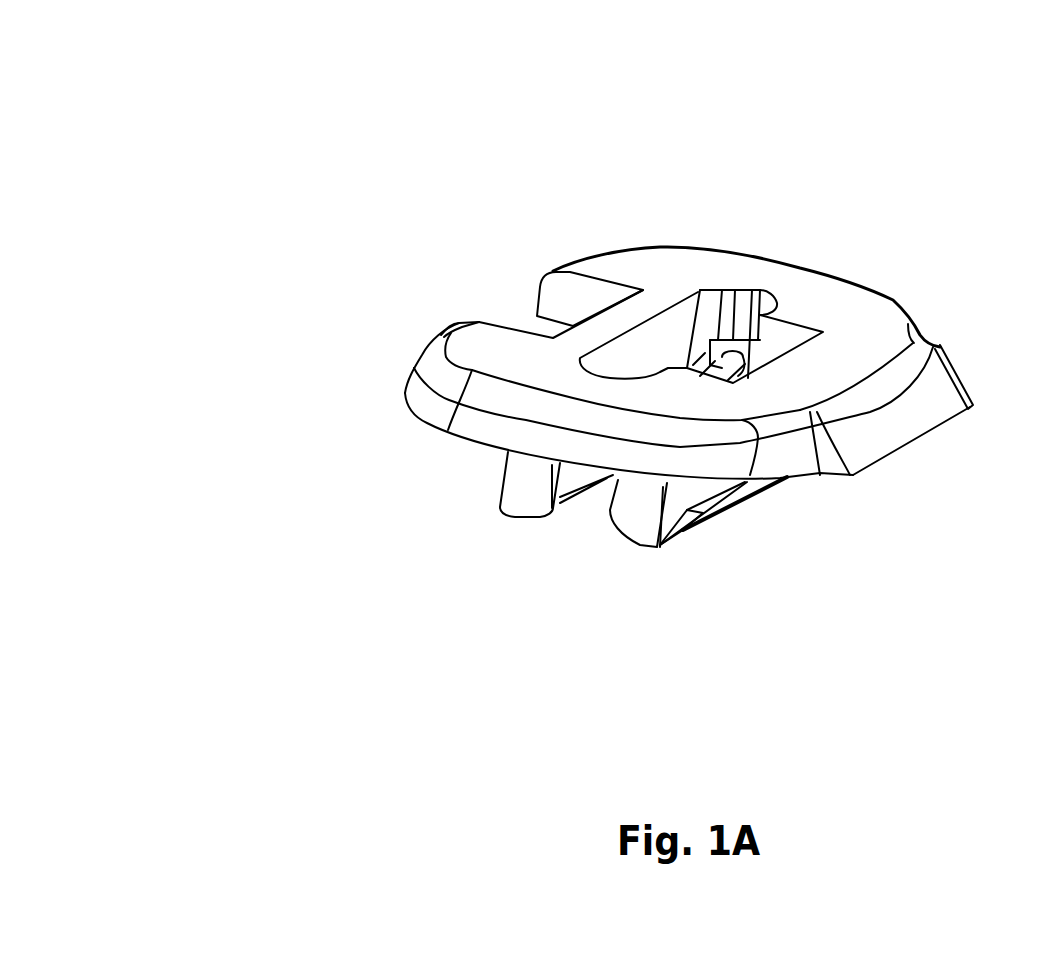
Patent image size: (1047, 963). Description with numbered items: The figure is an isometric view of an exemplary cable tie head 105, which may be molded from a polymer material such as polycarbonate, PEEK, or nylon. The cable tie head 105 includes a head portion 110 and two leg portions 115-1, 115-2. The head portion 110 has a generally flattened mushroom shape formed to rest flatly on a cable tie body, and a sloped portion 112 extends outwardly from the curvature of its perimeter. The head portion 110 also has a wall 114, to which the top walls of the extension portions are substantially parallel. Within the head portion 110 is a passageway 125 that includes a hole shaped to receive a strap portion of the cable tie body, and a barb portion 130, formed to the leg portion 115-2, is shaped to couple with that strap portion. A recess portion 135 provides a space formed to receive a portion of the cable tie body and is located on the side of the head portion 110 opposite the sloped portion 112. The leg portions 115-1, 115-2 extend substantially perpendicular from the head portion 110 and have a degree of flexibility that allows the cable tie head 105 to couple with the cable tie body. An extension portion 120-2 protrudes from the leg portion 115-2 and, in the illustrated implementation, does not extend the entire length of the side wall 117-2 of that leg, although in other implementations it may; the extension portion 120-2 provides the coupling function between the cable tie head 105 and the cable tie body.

The cable tie head 105 is at (232, 55).
The head portion 110 is at (393, 345).
The sloped portion 112 is at (926, 400).
The wall 114 is at (469, 447).
The leg portion 115-1 is at (520, 496).
The leg portion 115-2 is at (635, 531).
The side wall 117-2 is at (673, 534).
The extension portion 120-2 is at (751, 513).
The passageway 125 is at (668, 341).
The barb portion 130 is at (718, 362).
The recess portion 135 is at (571, 314).